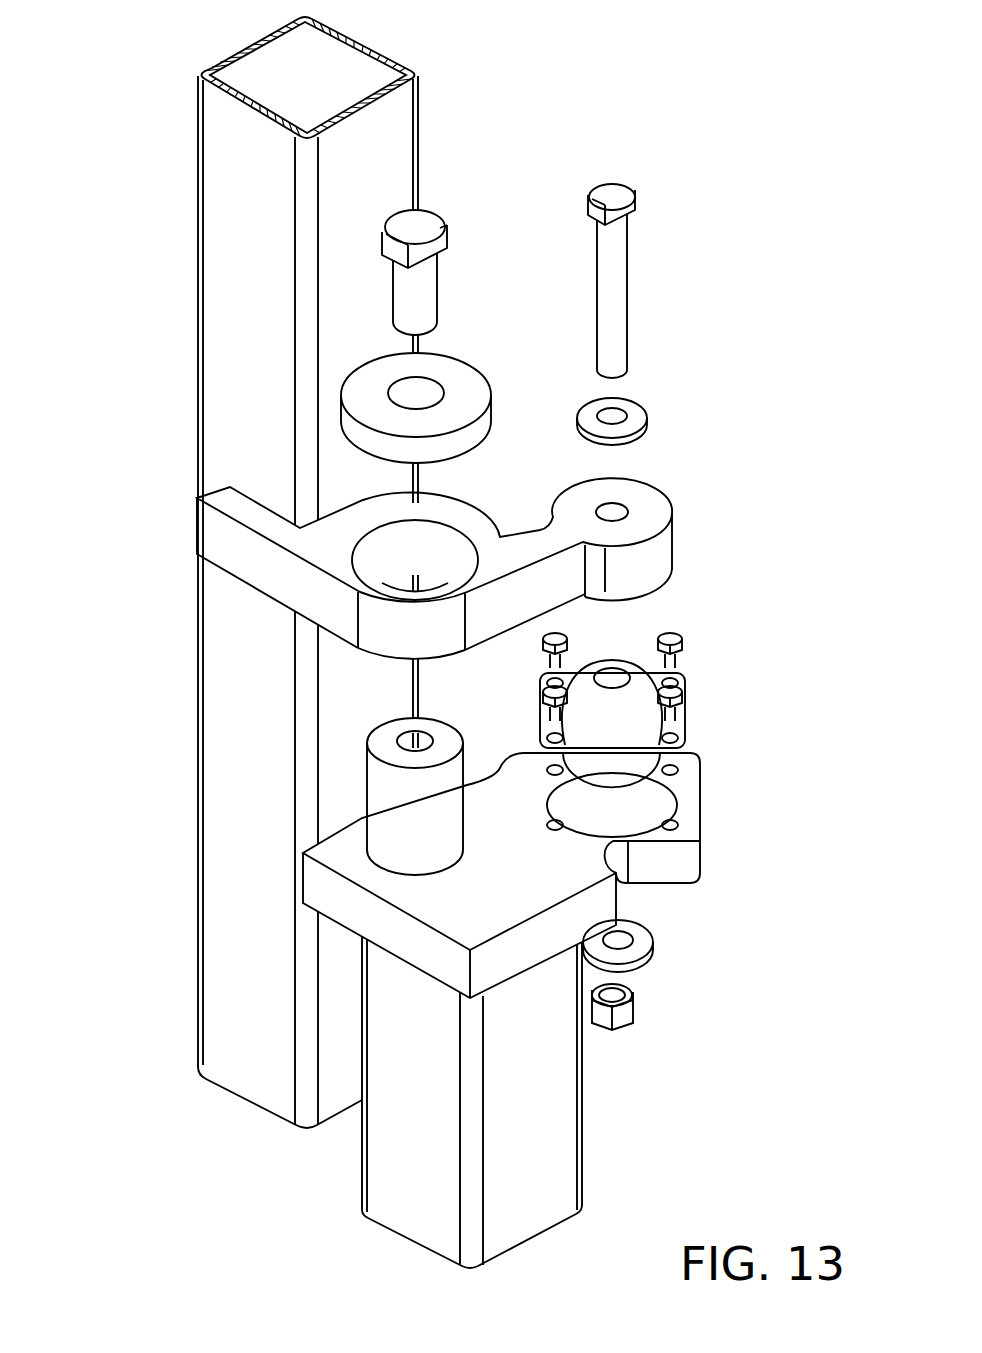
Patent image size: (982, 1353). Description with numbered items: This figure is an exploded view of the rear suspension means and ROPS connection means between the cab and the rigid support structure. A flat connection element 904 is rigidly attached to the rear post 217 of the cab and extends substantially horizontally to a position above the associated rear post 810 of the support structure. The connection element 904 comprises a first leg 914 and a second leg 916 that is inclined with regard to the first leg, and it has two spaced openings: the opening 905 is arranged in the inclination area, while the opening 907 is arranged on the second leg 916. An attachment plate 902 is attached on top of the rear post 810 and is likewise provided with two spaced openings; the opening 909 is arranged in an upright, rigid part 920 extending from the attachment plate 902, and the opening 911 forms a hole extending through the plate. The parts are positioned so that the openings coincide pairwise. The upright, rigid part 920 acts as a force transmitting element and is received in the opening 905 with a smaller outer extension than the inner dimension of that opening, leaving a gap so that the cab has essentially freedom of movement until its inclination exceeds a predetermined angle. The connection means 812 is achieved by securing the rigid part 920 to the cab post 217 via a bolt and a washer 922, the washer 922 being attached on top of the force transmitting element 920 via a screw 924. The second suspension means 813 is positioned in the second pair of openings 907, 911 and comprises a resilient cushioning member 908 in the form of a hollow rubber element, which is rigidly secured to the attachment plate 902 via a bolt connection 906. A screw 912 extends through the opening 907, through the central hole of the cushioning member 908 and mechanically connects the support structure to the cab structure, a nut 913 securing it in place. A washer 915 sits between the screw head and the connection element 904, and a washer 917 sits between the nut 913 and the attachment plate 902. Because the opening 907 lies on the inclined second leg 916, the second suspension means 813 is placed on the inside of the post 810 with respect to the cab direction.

The rear post 217 is at (215, 940).
The connection means 812 is at (324, 286).
The screw 924 is at (405, 300).
The washer 922 is at (355, 385).
The second suspension means 813 is at (670, 557).
The screw 912 is at (623, 275).
The washer 915 is at (640, 415).
The washer 917 is at (640, 940).
The nut 913 is at (625, 1015).
The connection element 904 is at (430, 530).
The opening 905 is at (385, 535).
The opening 907 is at (612, 505).
The first leg 914 is at (230, 553).
The second leg 916 is at (557, 588).
The upright rigid part 920 is at (274, 764).
The opening 909 is at (410, 735).
The attachment plate 902 is at (548, 864).
The opening 911 is at (660, 790).
The resilient cushioning member 908 is at (655, 690).
The bolt connection 906 is at (673, 637).
The rear post 810 is at (565, 1140).